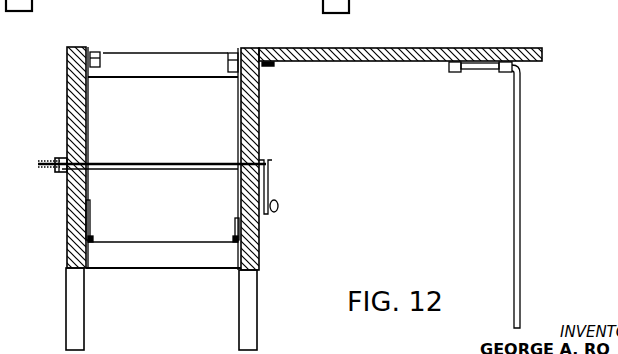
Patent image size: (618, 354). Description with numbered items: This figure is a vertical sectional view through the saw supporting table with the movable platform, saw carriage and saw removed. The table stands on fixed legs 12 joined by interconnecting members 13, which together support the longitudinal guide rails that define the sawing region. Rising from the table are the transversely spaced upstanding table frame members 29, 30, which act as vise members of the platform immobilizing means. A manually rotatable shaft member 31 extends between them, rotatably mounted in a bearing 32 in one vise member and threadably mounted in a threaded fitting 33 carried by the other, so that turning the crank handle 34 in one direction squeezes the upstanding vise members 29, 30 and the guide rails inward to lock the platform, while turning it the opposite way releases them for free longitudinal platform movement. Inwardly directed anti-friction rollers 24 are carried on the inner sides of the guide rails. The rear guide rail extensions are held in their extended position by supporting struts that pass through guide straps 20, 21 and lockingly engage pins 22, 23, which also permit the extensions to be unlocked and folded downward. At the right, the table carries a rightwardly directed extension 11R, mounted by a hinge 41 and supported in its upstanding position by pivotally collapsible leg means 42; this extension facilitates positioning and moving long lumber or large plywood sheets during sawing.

The rightwardly directed extension 11R is at (494, 34).
The fixed legs 12 is at (80, 338).
The interconnecting members 13 is at (192, 262).
The guide strap 20 is at (90, 232).
The guide strap 21 is at (236, 228).
The pin 22 is at (93, 242).
The pin 23 is at (233, 242).
The anti-friction rollers 24 is at (100, 60).
The upstanding table frame member 29 is at (67, 121).
The upstanding table frame member 30 is at (259, 128).
The shaft member 31 is at (142, 166).
The bearing 32 is at (266, 166).
The threaded fitting 33 is at (58, 172).
The crank handle 34 is at (278, 205).
The hinge 41 is at (270, 63).
The pivotally collapsible leg means 42 is at (520, 148).